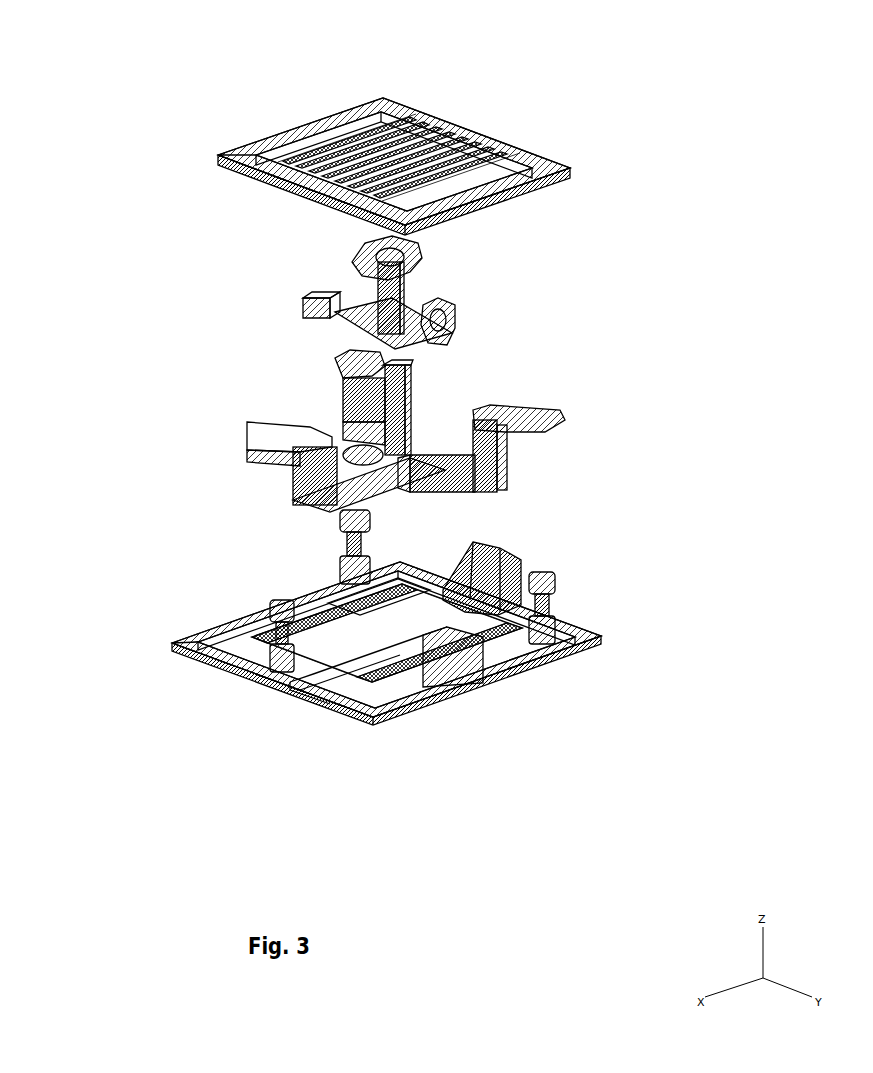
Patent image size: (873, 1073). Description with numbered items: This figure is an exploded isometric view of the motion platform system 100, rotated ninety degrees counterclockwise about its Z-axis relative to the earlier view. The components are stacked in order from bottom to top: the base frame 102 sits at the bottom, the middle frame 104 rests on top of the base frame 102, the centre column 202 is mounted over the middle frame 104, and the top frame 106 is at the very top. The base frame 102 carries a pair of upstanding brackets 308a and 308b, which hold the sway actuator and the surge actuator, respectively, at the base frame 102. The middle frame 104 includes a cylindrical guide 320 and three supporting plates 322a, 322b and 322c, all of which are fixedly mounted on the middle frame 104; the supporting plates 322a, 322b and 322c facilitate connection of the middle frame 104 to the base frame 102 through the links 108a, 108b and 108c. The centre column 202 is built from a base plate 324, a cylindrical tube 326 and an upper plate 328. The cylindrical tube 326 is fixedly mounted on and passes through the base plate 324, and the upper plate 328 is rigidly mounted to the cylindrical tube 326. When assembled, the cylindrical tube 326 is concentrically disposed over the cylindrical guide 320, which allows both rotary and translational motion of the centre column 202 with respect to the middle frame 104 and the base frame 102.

The motion platform system 100 is at (42, 37).
The base frame 102 is at (435, 631).
The middle frame 104 is at (438, 421).
The top frame 106 is at (518, 130).
The link 108a is at (340, 548).
The link 108b is at (542, 610).
The link 108c is at (273, 633).
The centre column 202 is at (486, 291).
The upstanding bracket 308a is at (505, 553).
The upstanding bracket 308b is at (457, 663).
The cylindrical guide 320 is at (397, 392).
The supporting plate 322a is at (340, 367).
The supporting plate 322b is at (525, 418).
The supporting plate 322c is at (272, 437).
The base plate 324 is at (433, 320).
The cylindrical tube 326 is at (400, 285).
The upper plate 328 is at (372, 257).